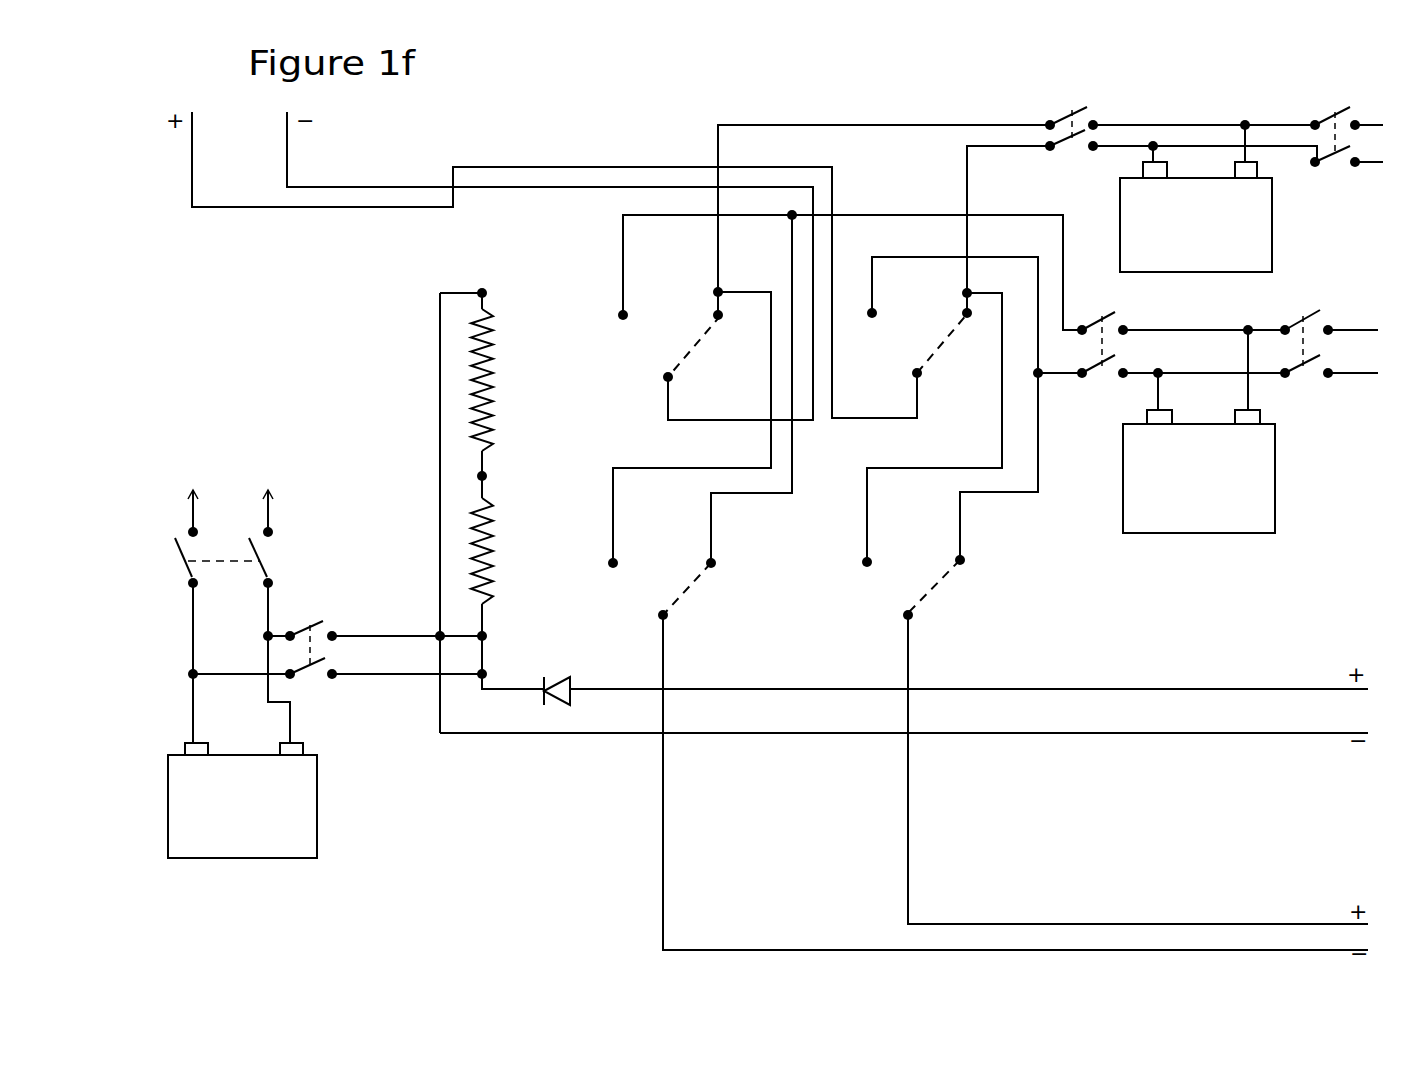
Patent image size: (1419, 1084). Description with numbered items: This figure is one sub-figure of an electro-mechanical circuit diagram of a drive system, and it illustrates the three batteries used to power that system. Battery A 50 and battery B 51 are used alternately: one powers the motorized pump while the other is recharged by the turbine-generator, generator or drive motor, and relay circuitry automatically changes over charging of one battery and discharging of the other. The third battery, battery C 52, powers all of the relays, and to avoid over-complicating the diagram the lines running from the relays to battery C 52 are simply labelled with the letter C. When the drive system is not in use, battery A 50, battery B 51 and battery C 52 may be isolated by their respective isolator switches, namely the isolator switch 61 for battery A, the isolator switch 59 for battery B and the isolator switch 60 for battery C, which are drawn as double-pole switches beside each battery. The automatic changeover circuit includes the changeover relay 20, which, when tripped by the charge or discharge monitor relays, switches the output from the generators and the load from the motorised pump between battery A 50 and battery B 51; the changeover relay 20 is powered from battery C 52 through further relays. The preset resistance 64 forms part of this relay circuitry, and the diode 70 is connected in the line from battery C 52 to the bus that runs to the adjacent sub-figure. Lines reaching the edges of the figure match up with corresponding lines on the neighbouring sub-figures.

The relay 4 20 is at (467, 475).
The battery A 50 is at (1254, 229).
The battery B 51 is at (1249, 481).
The battery C 52 is at (292, 826).
The switch s7 59 is at (1275, 312).
The switch s8 60 is at (277, 562).
The switch s9 61 is at (1318, 103).
The preset 3 64 is at (340, 625).
The diode 1 70 is at (562, 710).